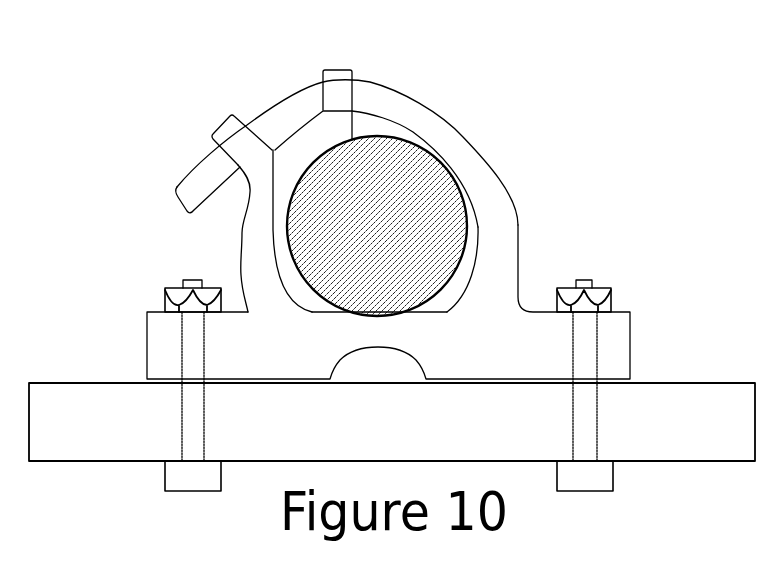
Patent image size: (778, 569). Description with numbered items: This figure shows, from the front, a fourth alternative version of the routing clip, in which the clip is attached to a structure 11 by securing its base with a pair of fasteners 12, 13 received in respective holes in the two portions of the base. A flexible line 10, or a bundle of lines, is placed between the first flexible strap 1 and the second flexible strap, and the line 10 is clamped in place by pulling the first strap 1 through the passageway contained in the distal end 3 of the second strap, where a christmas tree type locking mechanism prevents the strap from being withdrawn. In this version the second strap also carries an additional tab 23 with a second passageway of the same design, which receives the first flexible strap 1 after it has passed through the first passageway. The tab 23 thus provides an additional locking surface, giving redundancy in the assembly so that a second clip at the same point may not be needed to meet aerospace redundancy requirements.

The first flexible strap 1 is at (283, 110).
The distal end 3 is at (330, 67).
The flexible line 10 is at (420, 187).
The structure 11 is at (98, 380).
The fastener 12 is at (187, 432).
The fastener 13 is at (587, 422).
The tab 23 is at (228, 117).